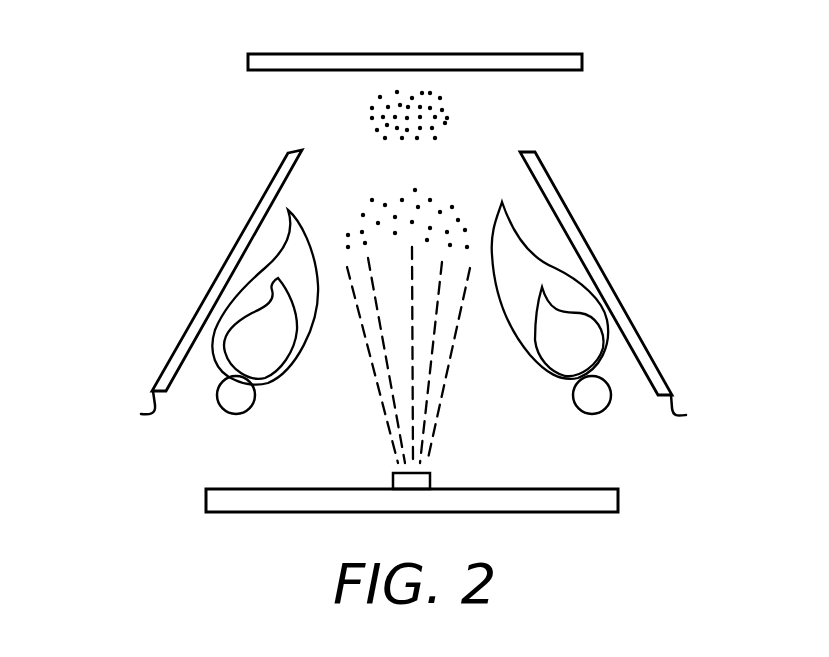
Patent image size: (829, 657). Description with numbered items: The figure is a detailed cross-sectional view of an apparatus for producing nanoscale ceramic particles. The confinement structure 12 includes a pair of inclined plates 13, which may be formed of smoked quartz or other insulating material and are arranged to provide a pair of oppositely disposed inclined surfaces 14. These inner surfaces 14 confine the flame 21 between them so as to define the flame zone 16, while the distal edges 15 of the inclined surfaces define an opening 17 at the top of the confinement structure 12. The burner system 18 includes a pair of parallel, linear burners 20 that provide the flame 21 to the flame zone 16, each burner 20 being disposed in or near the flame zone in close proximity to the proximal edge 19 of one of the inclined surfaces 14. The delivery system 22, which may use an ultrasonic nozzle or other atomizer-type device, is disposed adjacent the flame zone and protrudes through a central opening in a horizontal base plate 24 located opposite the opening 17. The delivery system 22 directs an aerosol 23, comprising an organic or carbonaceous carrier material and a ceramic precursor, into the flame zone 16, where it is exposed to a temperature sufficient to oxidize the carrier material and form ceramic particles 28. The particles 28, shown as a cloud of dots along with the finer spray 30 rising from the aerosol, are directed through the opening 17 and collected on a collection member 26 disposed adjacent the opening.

The confinement structure 12 is at (132, 281).
The inclined plates 13 is at (241, 233).
The inclined inner surfaces 14 is at (300, 160).
The distal edges 15 is at (297, 148).
The flame zone 16 is at (417, 300).
The opening 17 is at (368, 146).
The burner system 18 is at (414, 333).
The proximal edge 19 is at (418, 410).
The linear burners 20 is at (231, 405).
The flame 21 is at (259, 354).
The delivery system 22 is at (394, 483).
The aerosol 23 is at (440, 423).
The horizontal base plate 24 is at (612, 500).
The collection member 26 is at (470, 53).
The ceramic particles 28 is at (458, 104).
The atomized particles 30 is at (449, 196).